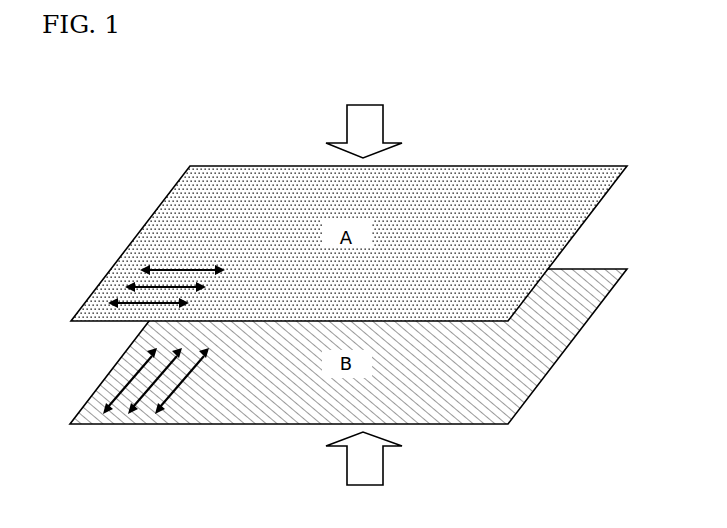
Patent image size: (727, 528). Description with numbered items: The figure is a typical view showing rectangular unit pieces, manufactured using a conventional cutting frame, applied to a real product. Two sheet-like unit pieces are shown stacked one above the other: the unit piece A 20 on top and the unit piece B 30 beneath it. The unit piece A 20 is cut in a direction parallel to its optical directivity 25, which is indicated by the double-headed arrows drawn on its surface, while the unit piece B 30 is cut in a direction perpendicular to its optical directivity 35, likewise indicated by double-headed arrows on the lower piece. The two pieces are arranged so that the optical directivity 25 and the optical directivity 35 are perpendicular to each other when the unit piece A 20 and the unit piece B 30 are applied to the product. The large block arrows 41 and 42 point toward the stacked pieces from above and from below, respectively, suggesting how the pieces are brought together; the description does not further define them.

The unit piece A 20 is at (563, 230).
The optical directivity 25 is at (143, 268).
The unit piece B 30 is at (563, 335).
The optical directivity 35 is at (132, 378).
The pressing direction from above 41 is at (363, 123).
The pressing direction from below 42 is at (363, 473).